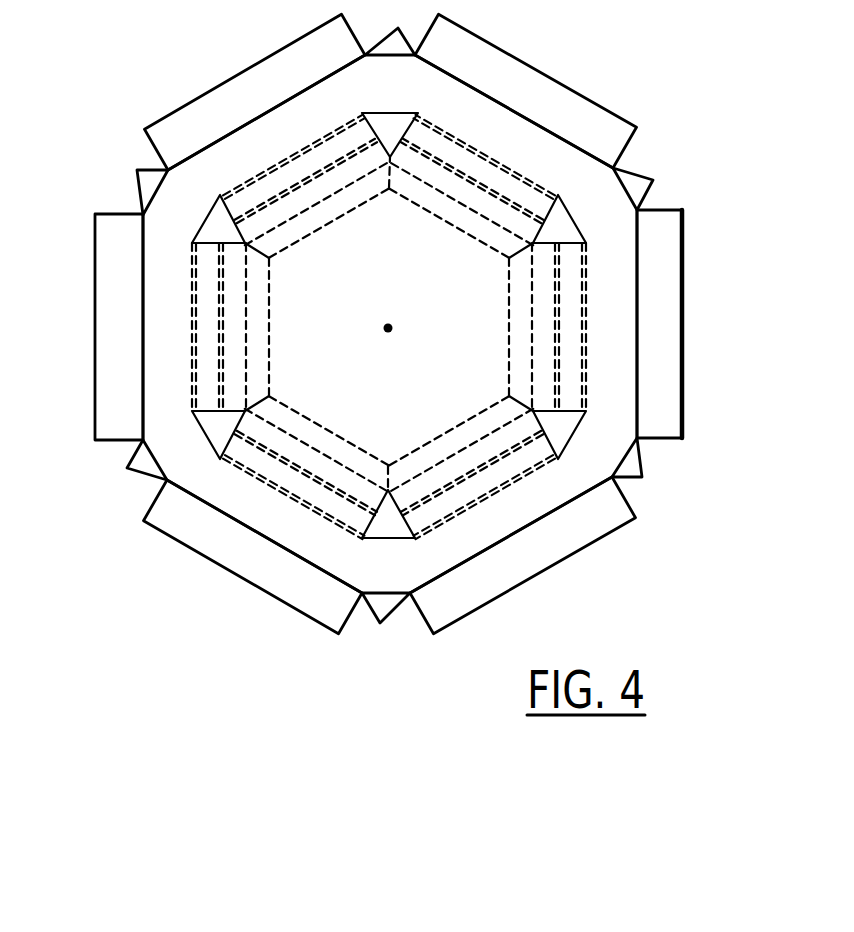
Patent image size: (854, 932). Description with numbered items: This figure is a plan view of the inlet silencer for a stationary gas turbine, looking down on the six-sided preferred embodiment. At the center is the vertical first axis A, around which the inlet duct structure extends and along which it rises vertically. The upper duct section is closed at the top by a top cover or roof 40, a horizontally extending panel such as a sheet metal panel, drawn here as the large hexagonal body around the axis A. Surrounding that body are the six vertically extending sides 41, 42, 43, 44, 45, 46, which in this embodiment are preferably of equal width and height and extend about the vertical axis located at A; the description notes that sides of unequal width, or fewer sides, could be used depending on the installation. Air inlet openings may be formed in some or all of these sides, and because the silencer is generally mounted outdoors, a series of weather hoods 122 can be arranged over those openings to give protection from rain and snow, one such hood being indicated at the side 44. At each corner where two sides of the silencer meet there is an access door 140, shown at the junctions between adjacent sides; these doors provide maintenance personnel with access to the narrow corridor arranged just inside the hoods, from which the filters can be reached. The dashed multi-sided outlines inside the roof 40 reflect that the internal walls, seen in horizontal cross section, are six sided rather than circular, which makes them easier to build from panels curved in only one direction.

The top cover or roof 40 is at (572, 160).
The vertically extending side 41 is at (142, 325).
The vertically extending side 42 is at (257, 118).
The vertically extending side 43 is at (500, 105).
The vertically extending side 44 is at (638, 302).
The vertically extending side 45 is at (533, 530).
The vertically extending side 46 is at (263, 540).
The weather hood 122 is at (667, 370).
The access door 140 is at (643, 172).
The vertical first axis A is at (392, 325).